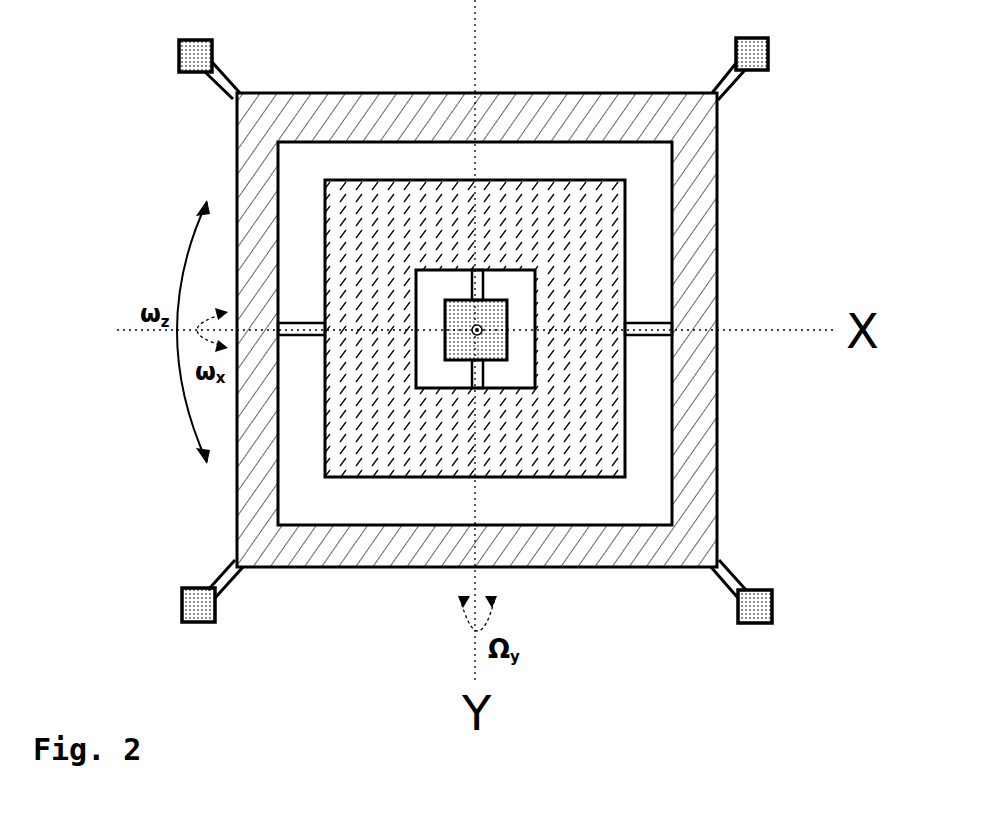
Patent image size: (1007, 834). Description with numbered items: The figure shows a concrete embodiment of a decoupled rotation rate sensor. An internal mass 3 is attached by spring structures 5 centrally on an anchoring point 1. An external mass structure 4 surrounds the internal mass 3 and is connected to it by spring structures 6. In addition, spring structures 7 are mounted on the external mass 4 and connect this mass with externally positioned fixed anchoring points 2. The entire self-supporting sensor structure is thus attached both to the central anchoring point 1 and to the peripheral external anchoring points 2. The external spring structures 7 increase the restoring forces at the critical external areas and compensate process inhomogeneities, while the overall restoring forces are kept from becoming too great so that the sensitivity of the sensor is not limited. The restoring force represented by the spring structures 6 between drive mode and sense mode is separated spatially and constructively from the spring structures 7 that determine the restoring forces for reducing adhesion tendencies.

The anchoring point 1 is at (507, 338).
The fixed anchoring points 2 is at (213, 50).
The internal mass 3 is at (628, 223).
The external mass structure 4 is at (717, 507).
The spring structures 5 is at (465, 278).
The spring structures 6 is at (300, 338).
The spring structures 7 is at (226, 82).